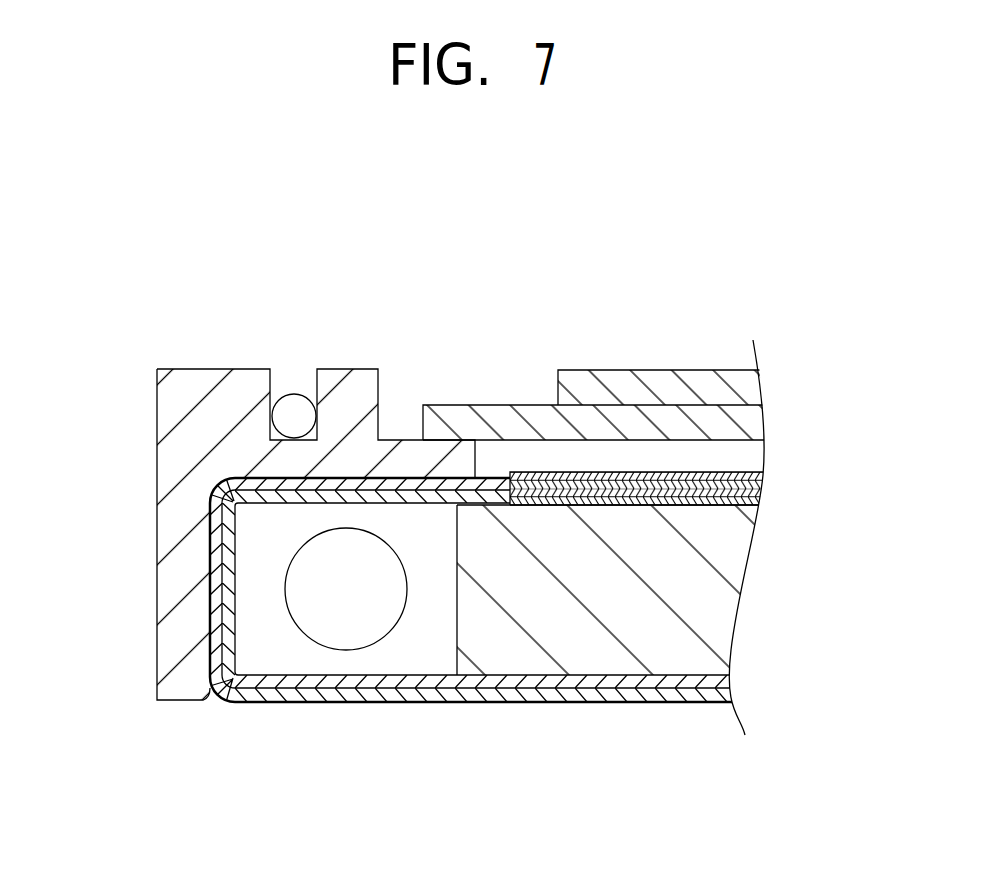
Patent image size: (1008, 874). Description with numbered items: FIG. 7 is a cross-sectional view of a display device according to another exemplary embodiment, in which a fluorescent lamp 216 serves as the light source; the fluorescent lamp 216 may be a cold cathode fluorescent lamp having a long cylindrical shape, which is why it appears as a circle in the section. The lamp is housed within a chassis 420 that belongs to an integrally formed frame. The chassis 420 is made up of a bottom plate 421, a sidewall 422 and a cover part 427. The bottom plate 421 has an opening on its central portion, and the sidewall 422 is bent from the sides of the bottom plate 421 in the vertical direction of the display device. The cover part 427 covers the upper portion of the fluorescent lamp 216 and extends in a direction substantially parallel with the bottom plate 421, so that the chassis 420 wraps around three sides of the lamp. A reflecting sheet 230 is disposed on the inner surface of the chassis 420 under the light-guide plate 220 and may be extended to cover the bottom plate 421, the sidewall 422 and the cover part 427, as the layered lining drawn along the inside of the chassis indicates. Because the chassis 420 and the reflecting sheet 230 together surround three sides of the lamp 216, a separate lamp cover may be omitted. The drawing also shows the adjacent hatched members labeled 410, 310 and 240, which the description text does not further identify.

The frame 410 is at (172, 530).
The window 310 is at (768, 403).
The adhesive layer 240 is at (762, 487).
The light-guide plate 220 is at (727, 568).
The reflecting sheet 230 is at (723, 682).
The chassis 420 is at (333, 655).
The sidewall 422 is at (212, 624).
The cover part 427 is at (270, 485).
The bottom plate 421 is at (372, 645).
The fluorescent lamp 216 is at (353, 628).